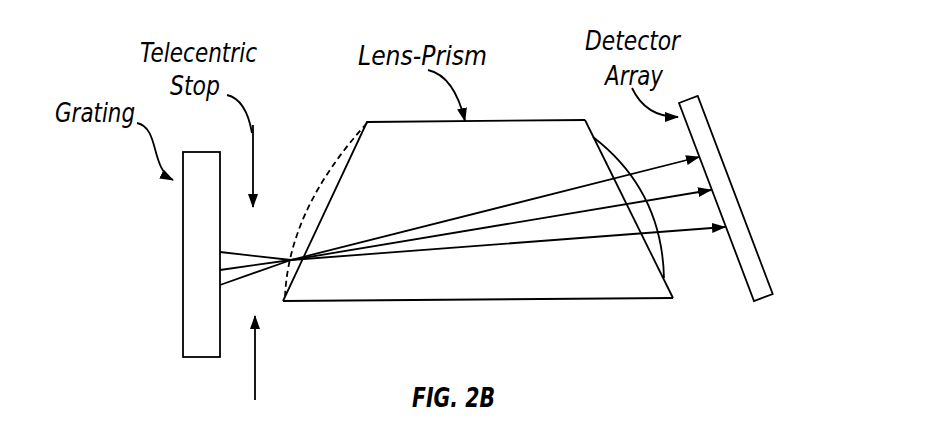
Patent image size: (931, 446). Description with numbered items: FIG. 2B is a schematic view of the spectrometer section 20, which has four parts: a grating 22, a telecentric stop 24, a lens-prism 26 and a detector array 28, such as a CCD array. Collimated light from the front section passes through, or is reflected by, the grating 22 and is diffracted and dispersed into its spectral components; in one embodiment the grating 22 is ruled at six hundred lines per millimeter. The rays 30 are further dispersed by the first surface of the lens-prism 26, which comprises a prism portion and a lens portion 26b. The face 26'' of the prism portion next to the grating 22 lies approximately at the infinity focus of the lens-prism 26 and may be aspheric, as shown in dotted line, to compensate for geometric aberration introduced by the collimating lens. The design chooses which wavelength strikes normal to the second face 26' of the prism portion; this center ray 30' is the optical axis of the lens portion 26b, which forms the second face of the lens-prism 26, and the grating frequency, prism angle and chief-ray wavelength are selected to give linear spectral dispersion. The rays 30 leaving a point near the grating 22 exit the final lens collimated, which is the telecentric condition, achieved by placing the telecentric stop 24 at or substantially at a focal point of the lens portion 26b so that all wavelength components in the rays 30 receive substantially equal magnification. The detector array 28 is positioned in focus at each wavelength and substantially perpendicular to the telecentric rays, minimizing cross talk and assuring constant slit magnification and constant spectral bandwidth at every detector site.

The spectrometer section 20 is at (115, 75).
The grating 22 is at (183, 281).
The telecentric stop 24 is at (277, 227).
The lens-prism 26 is at (478, 181).
The second face of the prism portion 26' is at (623, 234).
The face of the prism portion next to the grating 26'' is at (326, 249).
The lens portion 26b is at (665, 252).
The detector array 28 is at (712, 133).
The rays 30 is at (472, 253).
The center ray 30' is at (465, 262).